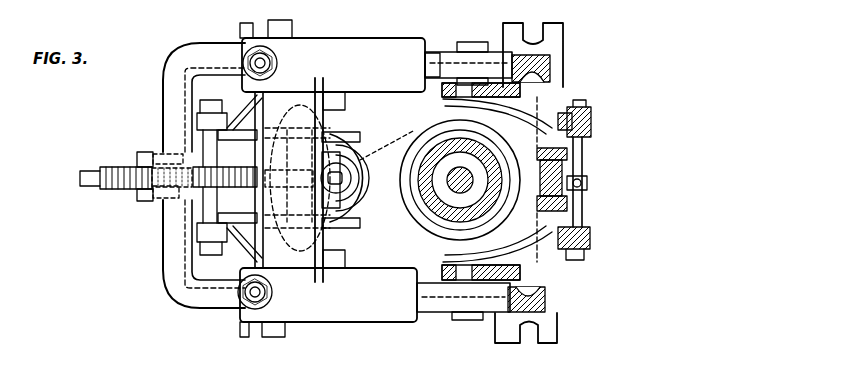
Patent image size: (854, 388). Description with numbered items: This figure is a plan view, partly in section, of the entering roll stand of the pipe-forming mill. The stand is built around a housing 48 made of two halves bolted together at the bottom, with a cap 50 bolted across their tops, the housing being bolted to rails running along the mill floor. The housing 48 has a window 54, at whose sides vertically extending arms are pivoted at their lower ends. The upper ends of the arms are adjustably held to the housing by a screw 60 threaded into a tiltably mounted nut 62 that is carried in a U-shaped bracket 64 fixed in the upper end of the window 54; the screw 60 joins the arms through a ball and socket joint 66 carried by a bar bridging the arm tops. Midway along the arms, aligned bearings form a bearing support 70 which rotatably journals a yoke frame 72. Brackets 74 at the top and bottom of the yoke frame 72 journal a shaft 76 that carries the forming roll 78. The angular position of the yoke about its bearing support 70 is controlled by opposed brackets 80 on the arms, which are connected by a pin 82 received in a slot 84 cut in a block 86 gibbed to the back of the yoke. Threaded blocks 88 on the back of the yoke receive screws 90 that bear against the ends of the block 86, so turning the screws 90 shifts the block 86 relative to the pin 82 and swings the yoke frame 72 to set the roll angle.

The housing 48 is at (565, 58).
The cap 50 is at (347, 313).
The window 54 is at (560, 82).
The screw 60 is at (107, 168).
The tiltably mounted nut 62 is at (166, 208).
The U-shaped bracket 64 is at (150, 152).
The ball and socket joint 66 is at (308, 122).
The bearing support 70 is at (428, 208).
The yoke frame 72 is at (540, 229).
The bracket 74 is at (553, 266).
The shaft 76 is at (440, 178).
The roll 78 is at (423, 143).
The opposed bracket 80 is at (562, 100).
The pin 82 is at (207, 208).
The slot 84 is at (584, 183).
The block 86 is at (588, 176).
The threaded block 88 is at (590, 192).
The screw 90 is at (590, 167).